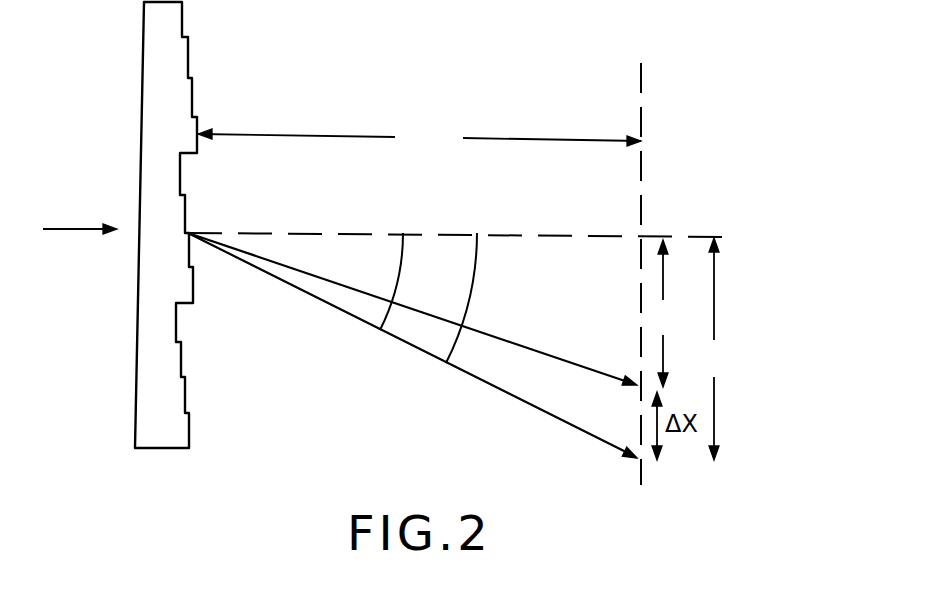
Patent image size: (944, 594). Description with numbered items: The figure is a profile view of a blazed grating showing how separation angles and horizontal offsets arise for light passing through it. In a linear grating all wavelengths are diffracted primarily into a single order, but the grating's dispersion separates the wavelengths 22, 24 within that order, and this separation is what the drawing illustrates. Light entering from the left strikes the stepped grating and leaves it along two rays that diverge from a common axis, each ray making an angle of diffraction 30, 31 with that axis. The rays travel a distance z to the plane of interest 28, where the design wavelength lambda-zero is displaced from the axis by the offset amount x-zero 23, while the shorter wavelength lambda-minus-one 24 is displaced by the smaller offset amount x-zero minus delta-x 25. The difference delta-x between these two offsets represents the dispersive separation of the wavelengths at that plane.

The wavelength 22 is at (517, 402).
The offset x0 23 is at (715, 300).
The shorter wavelength 24 is at (587, 368).
The offset x0 minus Δx 25 is at (665, 313).
The plane of interest 28 is at (409, 122).
The angle of diffraction 30 is at (480, 263).
The angle of diffraction 31 is at (406, 257).